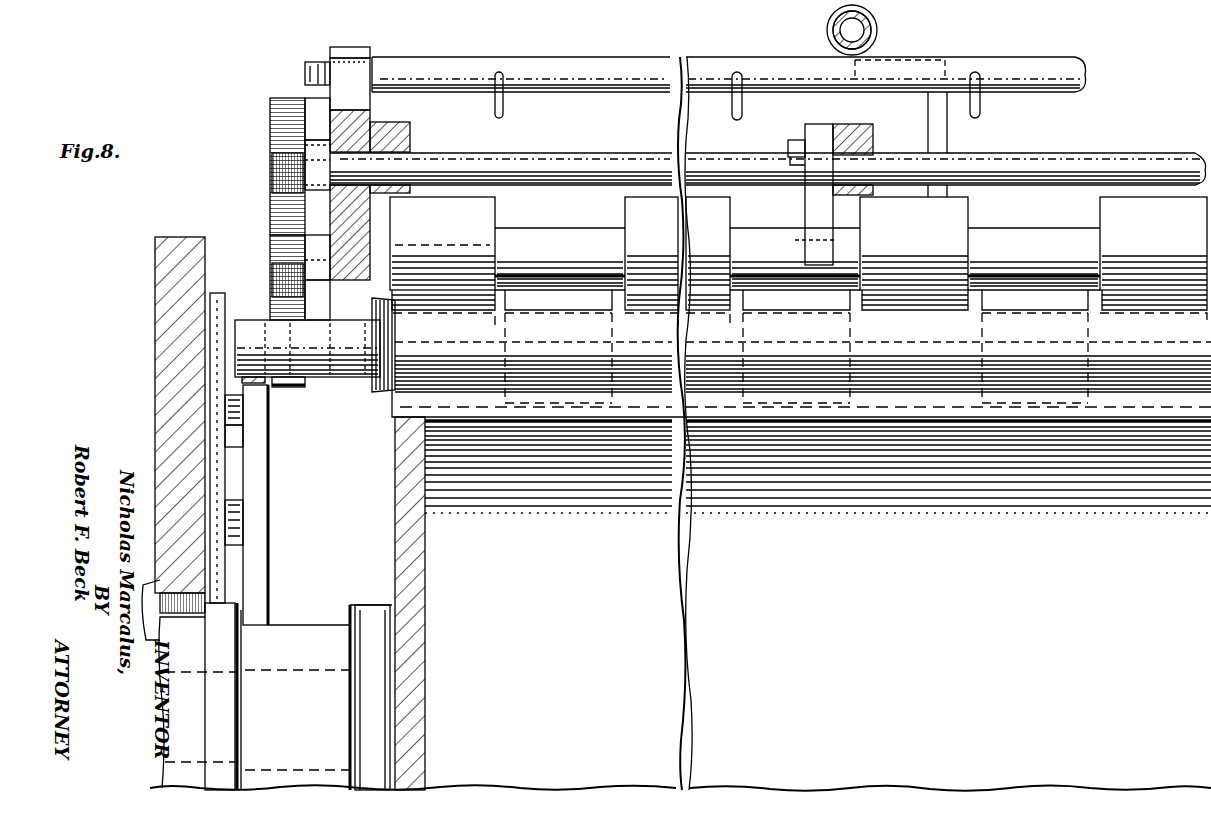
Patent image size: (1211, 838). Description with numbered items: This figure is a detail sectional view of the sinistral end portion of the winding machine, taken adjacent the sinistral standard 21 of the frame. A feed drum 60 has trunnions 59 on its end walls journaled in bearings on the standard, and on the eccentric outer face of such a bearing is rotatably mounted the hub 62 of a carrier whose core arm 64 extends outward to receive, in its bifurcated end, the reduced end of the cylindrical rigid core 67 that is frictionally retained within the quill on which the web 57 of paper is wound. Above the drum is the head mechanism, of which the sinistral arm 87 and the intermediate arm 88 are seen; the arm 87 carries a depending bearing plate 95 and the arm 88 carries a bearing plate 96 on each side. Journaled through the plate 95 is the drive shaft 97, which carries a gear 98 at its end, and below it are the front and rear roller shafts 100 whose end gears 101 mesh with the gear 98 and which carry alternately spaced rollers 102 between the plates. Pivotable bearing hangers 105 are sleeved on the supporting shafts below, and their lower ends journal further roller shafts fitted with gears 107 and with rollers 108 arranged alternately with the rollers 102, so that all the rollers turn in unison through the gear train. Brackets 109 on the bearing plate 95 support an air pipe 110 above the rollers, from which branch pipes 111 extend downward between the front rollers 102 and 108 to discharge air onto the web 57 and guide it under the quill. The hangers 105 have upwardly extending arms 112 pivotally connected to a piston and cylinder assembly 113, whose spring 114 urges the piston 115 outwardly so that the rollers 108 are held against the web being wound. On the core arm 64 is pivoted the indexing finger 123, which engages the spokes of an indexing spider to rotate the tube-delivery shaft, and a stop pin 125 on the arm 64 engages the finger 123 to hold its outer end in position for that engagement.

The sinistral standard 21 is at (158, 256).
The web 57 is at (395, 403).
The trunnion 59 is at (313, 653).
The feed drum 60 is at (400, 526).
The hub 62 is at (300, 612).
The core arm 64 is at (258, 484).
The core 67 is at (258, 335).
The sinistral arm 87 is at (410, 135).
The intermediate arm 88 is at (868, 134).
The bearing plate 95 is at (345, 128).
The bearing plate 96 is at (813, 124).
The drive shaft 97 is at (1060, 150).
The gear 98 is at (282, 98).
The roller shaft 100 is at (561, 230).
The gear 101 is at (272, 250).
The roller 102 is at (886, 218).
The bearing hanger 105 is at (385, 305).
The gear 107 is at (288, 386).
The roller 108 is at (550, 296).
The bracket 109 is at (351, 47).
The pipe 110 is at (992, 64).
The branch pipe 111 is at (503, 108).
The arm 112 is at (940, 135).
The piston and cylinder assembly 113 is at (886, 29).
The spring 114 is at (835, 25).
The piston 115 is at (850, 30).
The indexing finger 123 is at (215, 348).
The stop pin 125 is at (240, 452).